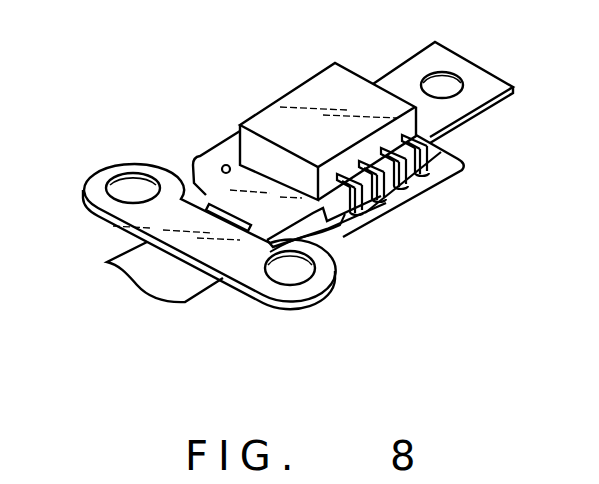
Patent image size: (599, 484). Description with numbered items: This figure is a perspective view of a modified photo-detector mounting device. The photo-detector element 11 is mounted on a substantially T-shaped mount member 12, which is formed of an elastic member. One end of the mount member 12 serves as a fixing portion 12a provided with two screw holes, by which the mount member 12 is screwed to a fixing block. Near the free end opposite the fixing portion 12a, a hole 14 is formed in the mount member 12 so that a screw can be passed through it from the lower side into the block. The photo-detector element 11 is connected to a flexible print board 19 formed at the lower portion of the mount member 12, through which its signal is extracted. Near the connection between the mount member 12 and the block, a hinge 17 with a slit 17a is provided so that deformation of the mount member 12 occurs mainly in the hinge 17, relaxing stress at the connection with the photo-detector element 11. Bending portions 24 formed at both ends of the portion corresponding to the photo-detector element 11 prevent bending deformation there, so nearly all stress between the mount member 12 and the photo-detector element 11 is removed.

The photo-detector element 11 is at (349, 81).
The mount member 12 is at (487, 85).
The fixing portion 12a is at (97, 199).
The hole 14 is at (446, 74).
The hinge 17 is at (255, 303).
The slit 17a is at (206, 205).
The flexible print board 19 is at (441, 166).
The bending portions 24 is at (345, 216).